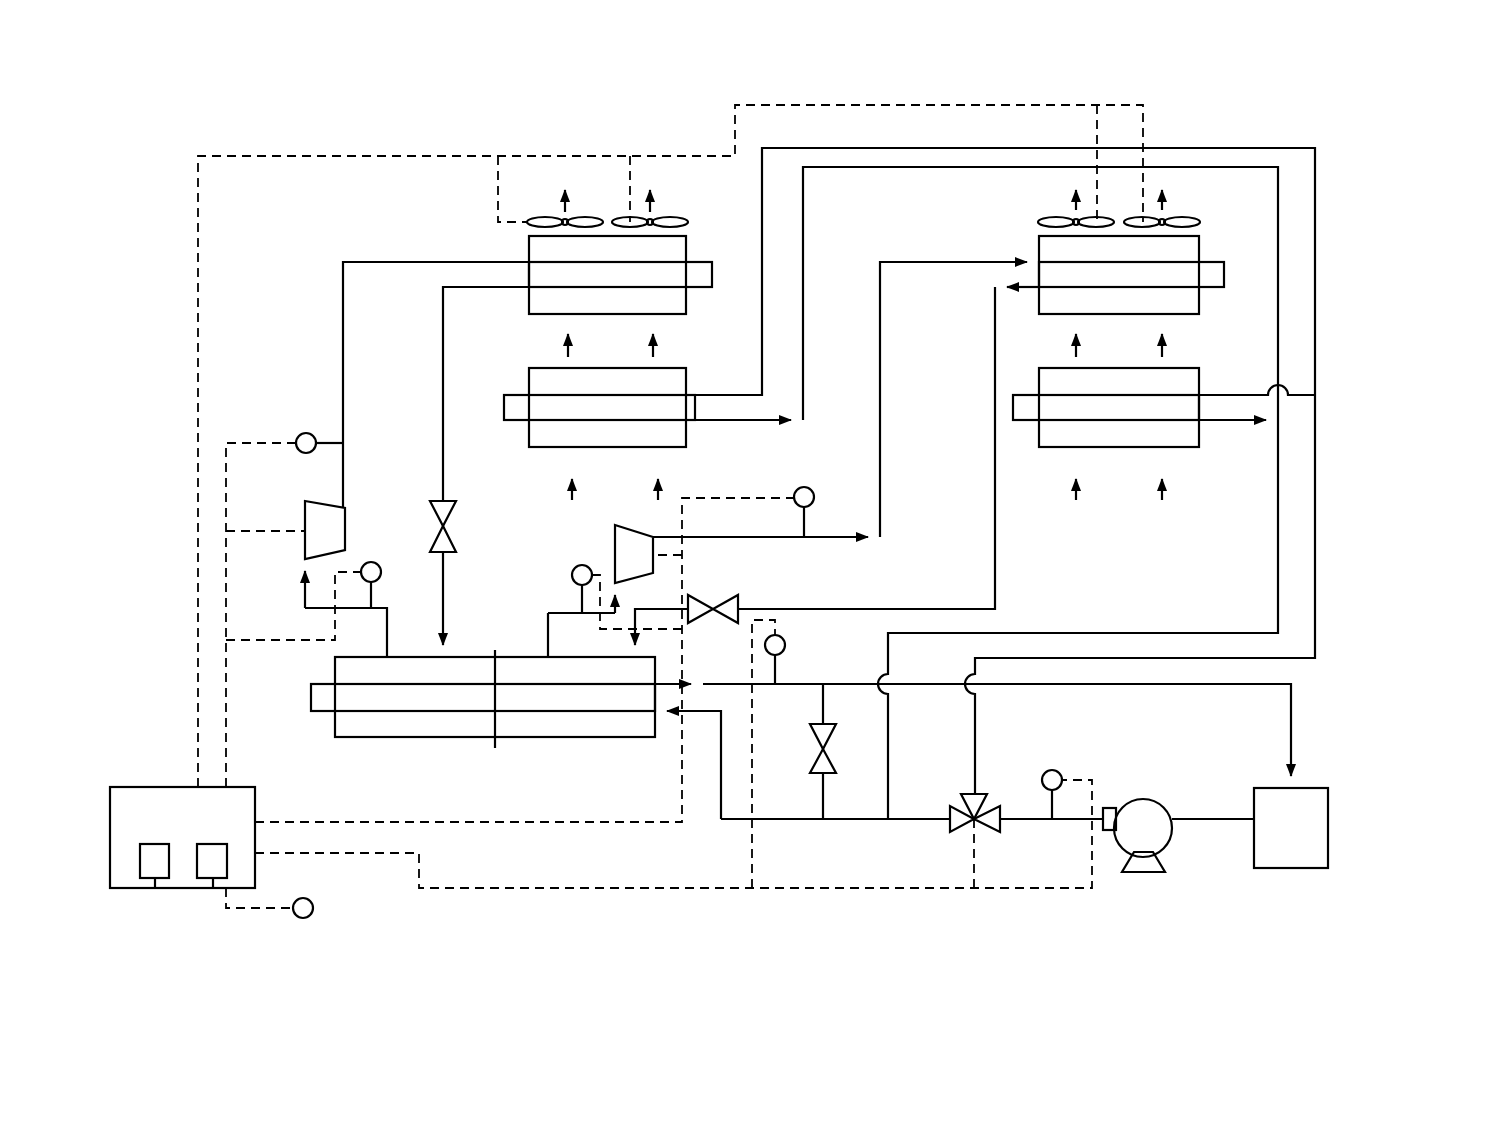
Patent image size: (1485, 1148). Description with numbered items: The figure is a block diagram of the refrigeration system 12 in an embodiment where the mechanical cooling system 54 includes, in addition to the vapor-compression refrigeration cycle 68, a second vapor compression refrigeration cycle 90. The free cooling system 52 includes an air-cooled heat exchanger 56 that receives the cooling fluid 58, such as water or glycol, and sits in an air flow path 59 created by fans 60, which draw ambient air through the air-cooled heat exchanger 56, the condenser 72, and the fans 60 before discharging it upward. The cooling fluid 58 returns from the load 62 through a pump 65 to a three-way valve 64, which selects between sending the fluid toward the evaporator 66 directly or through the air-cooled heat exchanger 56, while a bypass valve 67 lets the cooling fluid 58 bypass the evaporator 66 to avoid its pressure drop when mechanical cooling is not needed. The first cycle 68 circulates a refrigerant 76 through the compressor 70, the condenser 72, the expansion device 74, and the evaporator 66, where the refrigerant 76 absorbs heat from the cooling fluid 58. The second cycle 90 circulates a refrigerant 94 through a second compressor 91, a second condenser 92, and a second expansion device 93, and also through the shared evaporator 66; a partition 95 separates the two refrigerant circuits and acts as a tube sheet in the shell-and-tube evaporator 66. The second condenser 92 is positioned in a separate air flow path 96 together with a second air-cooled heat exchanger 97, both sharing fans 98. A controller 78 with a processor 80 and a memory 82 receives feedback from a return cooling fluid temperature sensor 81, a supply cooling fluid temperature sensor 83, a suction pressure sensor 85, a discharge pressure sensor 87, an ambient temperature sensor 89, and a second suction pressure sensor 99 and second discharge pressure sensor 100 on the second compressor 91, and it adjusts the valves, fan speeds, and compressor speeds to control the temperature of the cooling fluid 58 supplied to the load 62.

The refrigeration system 12 is at (1332, 122).
The free cooling system 52 is at (678, 462).
The mechanical cooling system 54 is at (368, 225).
The air-cooled heat exchanger 56 is at (700, 437).
The cooling fluid 58 is at (860, 819).
The air flow path 59 is at (565, 192).
The fans 60 is at (610, 216).
The load 62 is at (1328, 830).
The three-way valve 64 is at (988, 830).
The pump 65 is at (1143, 799).
The evaporator 66 is at (418, 740).
The bypass valve 67 is at (836, 760).
The vapor-compression refrigeration cycle 68 is at (393, 367).
The compressor 70 is at (347, 530).
The condenser 72 is at (529, 240).
The expansion device 74 is at (457, 540).
The refrigerant 76 is at (343, 320).
The controller 78 is at (125, 787).
The processor 80 is at (155, 888).
The return cooling fluid temperature sensor 81 is at (1044, 773).
The memory 82 is at (213, 888).
The supply cooling fluid temperature sensor 83 is at (785, 645).
The suction pressure sensor 85 is at (378, 565).
The discharge pressure sensor 87 is at (303, 433).
The ambient temperature sensor 89 is at (313, 908).
The second vapor compression refrigeration cycle 90 is at (933, 450).
The second compressor 91 is at (615, 535).
The second condenser 92 is at (1039, 245).
The second expansion device 93 is at (722, 620).
The refrigerant 94 is at (832, 535).
The partition 95 is at (497, 745).
The air flow path 96 is at (1076, 193).
The second air-cooled heat exchanger 97 is at (1185, 447).
The fans 98 is at (1050, 218).
The second suction pressure sensor 99 is at (573, 572).
The second discharge pressure sensor 100 is at (808, 488).